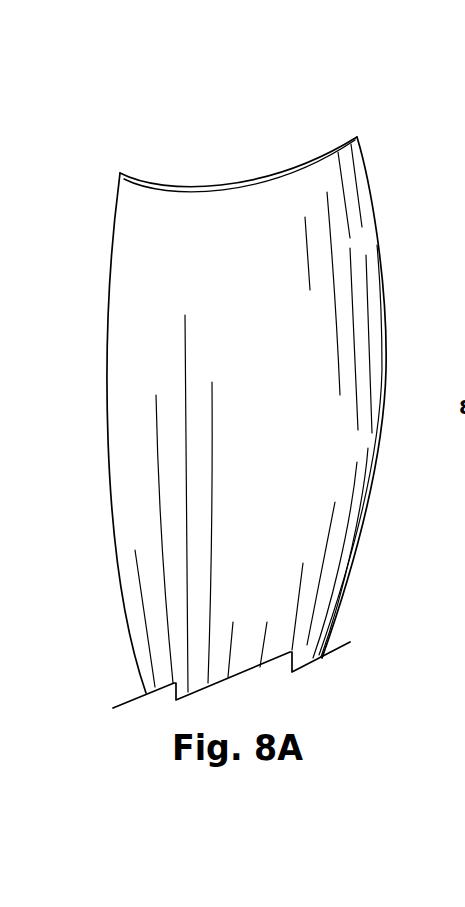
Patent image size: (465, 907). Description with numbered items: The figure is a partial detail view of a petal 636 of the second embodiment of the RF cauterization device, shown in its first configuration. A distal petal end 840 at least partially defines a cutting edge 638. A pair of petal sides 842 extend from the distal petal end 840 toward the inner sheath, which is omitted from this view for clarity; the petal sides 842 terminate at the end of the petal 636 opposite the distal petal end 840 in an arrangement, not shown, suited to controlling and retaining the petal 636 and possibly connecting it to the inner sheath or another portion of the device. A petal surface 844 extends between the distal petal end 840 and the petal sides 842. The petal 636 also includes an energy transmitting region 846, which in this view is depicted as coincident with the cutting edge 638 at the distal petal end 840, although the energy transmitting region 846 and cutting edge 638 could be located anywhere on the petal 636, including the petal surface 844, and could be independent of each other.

The petal 636 is at (205, 100).
The distal petal end 840 is at (180, 167).
The energy transmitting region 846 is at (255, 182).
The cutting edge 638 is at (305, 167).
The petal surface 844 is at (252, 333).
The petal sides 842 is at (104, 443).